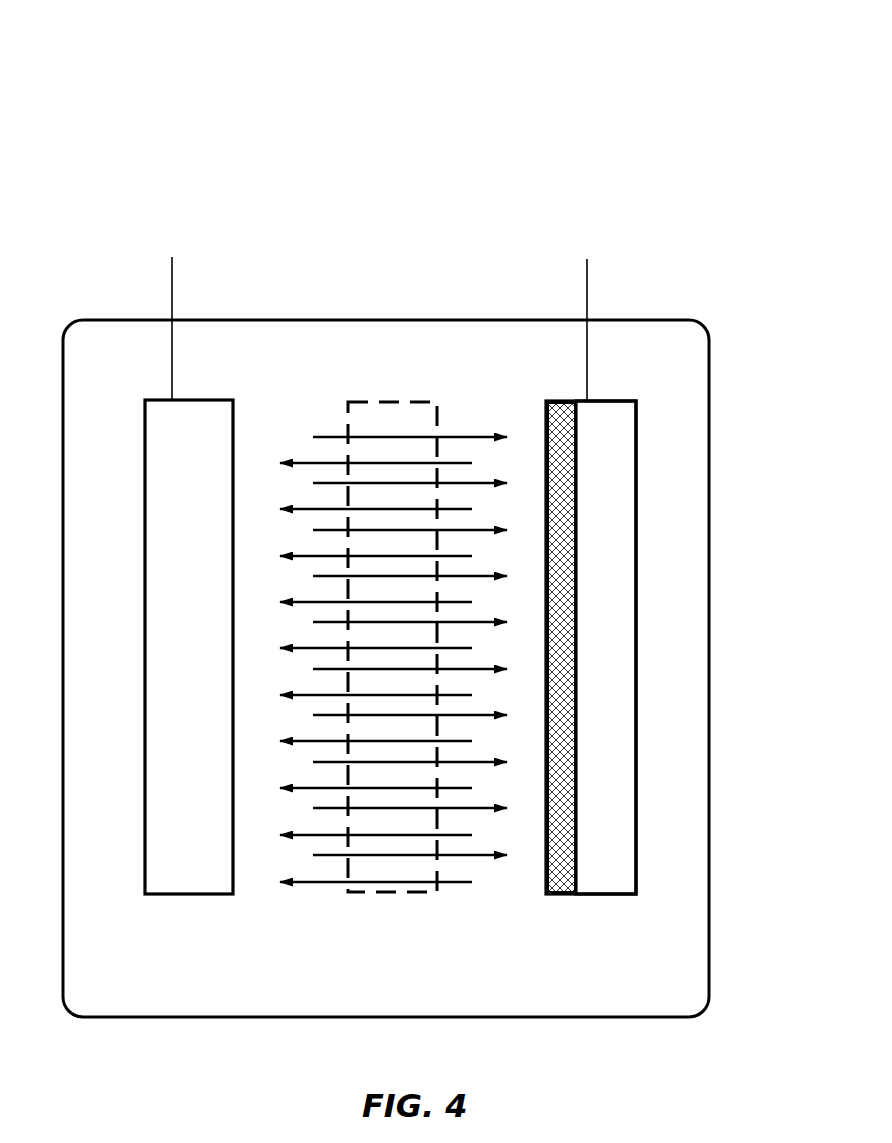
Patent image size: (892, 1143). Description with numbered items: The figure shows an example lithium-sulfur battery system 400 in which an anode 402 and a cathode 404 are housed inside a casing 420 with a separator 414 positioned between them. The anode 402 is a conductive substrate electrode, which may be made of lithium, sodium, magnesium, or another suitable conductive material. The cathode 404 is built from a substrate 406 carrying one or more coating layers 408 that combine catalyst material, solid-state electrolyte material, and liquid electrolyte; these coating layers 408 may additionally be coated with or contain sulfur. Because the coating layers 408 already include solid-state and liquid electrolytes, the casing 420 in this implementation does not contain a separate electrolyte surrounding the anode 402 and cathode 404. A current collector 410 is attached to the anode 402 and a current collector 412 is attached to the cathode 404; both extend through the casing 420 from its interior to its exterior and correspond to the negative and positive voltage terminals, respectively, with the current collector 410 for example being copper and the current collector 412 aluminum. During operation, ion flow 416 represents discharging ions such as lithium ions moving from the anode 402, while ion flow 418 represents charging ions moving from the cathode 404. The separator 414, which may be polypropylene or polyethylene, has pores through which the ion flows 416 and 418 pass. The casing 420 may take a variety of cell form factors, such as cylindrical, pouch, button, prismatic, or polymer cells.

The Li—S battery (LSB) system 400 is at (82, 80).
The anode 402 is at (182, 466).
The cathode 404 is at (600, 512).
The substrate 406 is at (607, 895).
The coating layers 408 is at (563, 895).
The current collector 410 is at (202, 228).
The current collector 412 is at (612, 238).
The separator 414 is at (373, 413).
The ion flow 416 is at (323, 437).
The ion flow 418 is at (460, 883).
The casing 420 is at (710, 998).